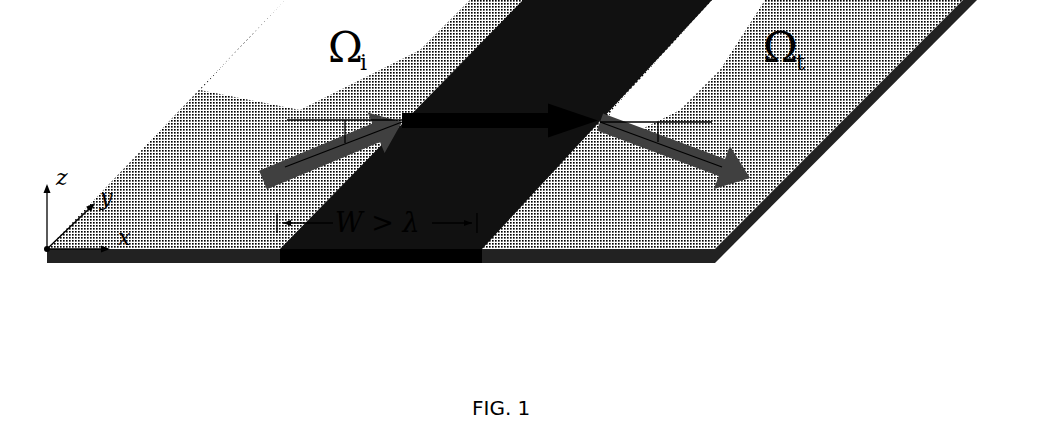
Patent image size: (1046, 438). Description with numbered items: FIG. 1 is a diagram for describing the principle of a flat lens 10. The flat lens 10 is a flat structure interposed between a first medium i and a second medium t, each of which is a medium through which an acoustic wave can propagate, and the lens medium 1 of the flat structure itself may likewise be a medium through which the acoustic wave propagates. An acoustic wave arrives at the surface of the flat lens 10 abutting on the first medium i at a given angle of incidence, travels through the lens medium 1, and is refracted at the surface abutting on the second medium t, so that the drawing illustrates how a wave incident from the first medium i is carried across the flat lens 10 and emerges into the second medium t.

The optical waveguide strip 10 is at (437, 243).
The guided wave in waveguide core (index n1) 1 is at (500, 106).
The first medium i is at (324, 121).
The second medium t is at (673, 120).